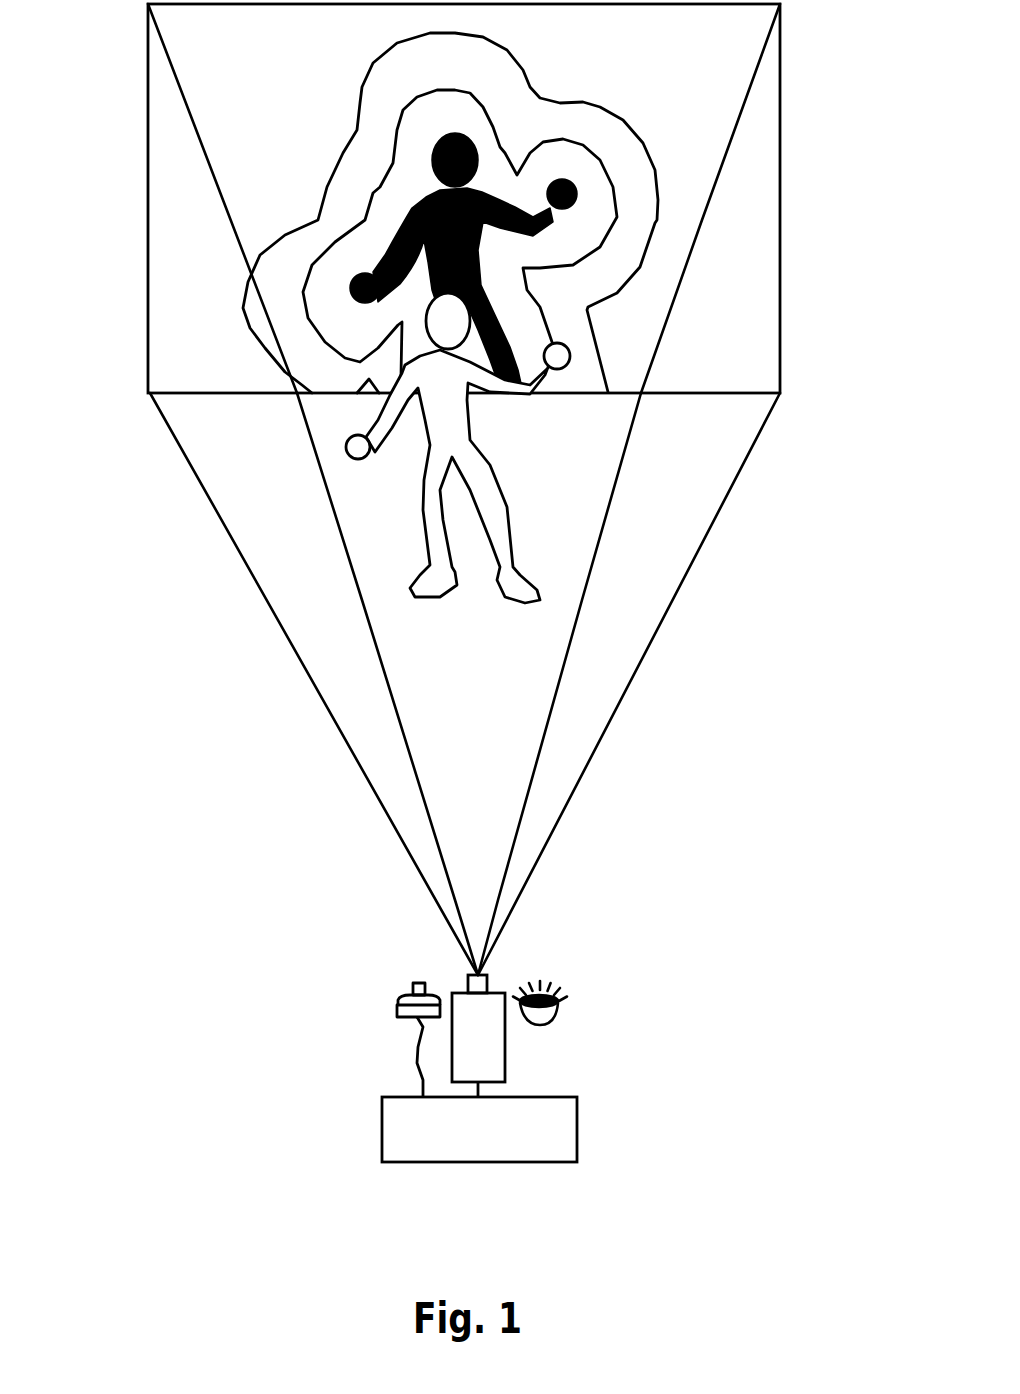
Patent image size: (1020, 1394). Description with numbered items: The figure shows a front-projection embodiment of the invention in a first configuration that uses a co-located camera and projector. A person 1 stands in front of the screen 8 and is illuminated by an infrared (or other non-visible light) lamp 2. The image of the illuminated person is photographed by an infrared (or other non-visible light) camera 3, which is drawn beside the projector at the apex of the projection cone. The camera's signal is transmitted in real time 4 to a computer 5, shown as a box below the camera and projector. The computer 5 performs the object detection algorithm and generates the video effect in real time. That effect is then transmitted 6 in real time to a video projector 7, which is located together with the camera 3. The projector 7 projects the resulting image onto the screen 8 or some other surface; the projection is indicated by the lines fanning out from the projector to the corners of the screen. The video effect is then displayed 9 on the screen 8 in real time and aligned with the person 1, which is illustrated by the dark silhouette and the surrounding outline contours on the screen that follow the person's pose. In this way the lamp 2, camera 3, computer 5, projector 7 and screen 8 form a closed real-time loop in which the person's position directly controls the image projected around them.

The person 1 is at (467, 410).
The infrared lamp 2 is at (558, 1013).
The infrared camera 3 is at (397, 1008).
The real-time transmission of camera signal 4 is at (417, 1060).
The computer 5 is at (507, 1162).
The real-time transmission of video effect 6 is at (478, 1090).
The video projector 7 is at (505, 1045).
The screen 8 is at (148, 186).
The displayed video effect 9 is at (620, 115).